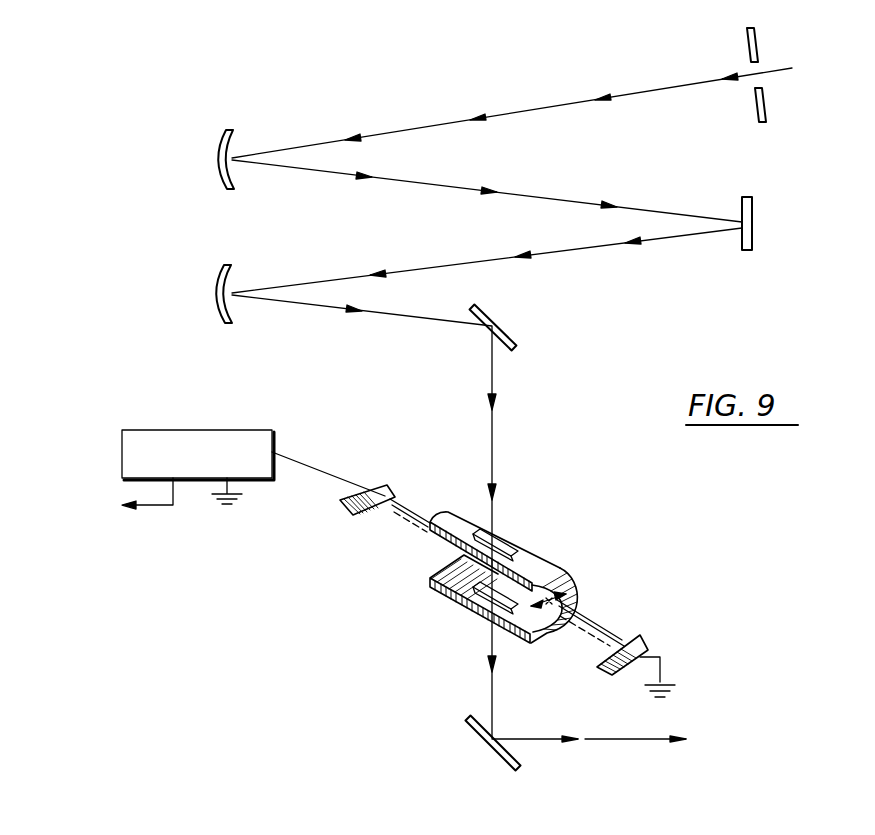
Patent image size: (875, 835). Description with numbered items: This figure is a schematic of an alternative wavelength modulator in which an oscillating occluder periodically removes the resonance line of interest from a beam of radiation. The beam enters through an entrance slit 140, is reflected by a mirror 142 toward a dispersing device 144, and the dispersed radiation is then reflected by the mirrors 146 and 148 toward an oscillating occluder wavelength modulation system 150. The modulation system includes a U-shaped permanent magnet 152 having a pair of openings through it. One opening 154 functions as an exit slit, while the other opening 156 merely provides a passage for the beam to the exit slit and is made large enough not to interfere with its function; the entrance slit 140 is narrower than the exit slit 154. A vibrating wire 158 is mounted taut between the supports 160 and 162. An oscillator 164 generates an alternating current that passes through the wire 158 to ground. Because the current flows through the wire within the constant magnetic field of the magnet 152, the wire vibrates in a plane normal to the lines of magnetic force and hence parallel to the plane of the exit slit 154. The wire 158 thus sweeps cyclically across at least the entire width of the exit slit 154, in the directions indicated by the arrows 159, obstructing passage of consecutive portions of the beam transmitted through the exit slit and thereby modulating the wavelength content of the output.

The entrance slit 140 is at (758, 46).
The mirror 142 is at (226, 160).
The dispersing device 144 is at (753, 224).
The mirror 146 is at (230, 290).
The mirror 148 is at (500, 323).
The oscillating occluder wavelength modulation system 150 is at (496, 564).
The U-shaped permanent magnet 152 is at (543, 551).
The exit slit 154 is at (485, 598).
The opening 156 is at (487, 538).
The vibrating wire 158 is at (590, 618).
The arrows 159 is at (551, 607).
The support 160 is at (640, 637).
The support 162 is at (338, 507).
The oscillator 164 is at (243, 430).